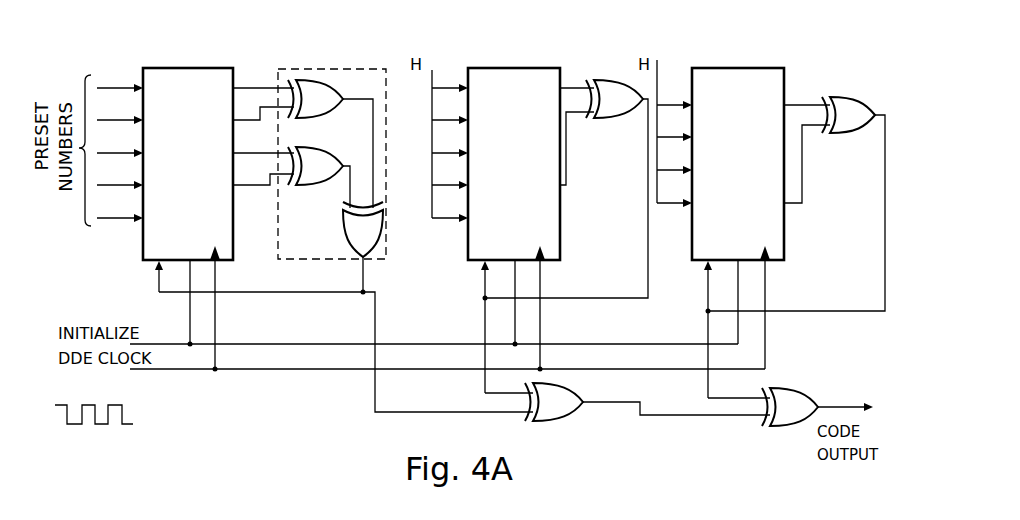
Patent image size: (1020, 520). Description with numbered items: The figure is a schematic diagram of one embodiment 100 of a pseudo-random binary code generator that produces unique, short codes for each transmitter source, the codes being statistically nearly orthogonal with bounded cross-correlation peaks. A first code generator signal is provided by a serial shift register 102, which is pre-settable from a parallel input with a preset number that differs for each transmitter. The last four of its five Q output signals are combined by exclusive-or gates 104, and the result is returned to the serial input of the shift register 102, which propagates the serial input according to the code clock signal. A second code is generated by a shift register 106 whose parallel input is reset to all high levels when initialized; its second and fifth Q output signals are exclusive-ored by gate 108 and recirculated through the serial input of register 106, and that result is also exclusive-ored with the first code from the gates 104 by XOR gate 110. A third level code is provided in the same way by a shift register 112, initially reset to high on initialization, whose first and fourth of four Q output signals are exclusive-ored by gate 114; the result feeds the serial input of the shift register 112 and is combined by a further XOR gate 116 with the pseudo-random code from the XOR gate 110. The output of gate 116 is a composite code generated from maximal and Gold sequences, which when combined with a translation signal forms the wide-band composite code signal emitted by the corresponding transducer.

The pseudo-random binary code generator 100 is at (225, 400).
The serial shift register 102 is at (180, 68).
The exclusive-or gates 104 is at (334, 68).
The shift register 106 is at (467, 250).
The gate 108 is at (608, 120).
The XOR gate 110 is at (572, 421).
The shift register 112 is at (730, 68).
The gate 114 is at (840, 134).
The further XOR gate 116 is at (808, 395).